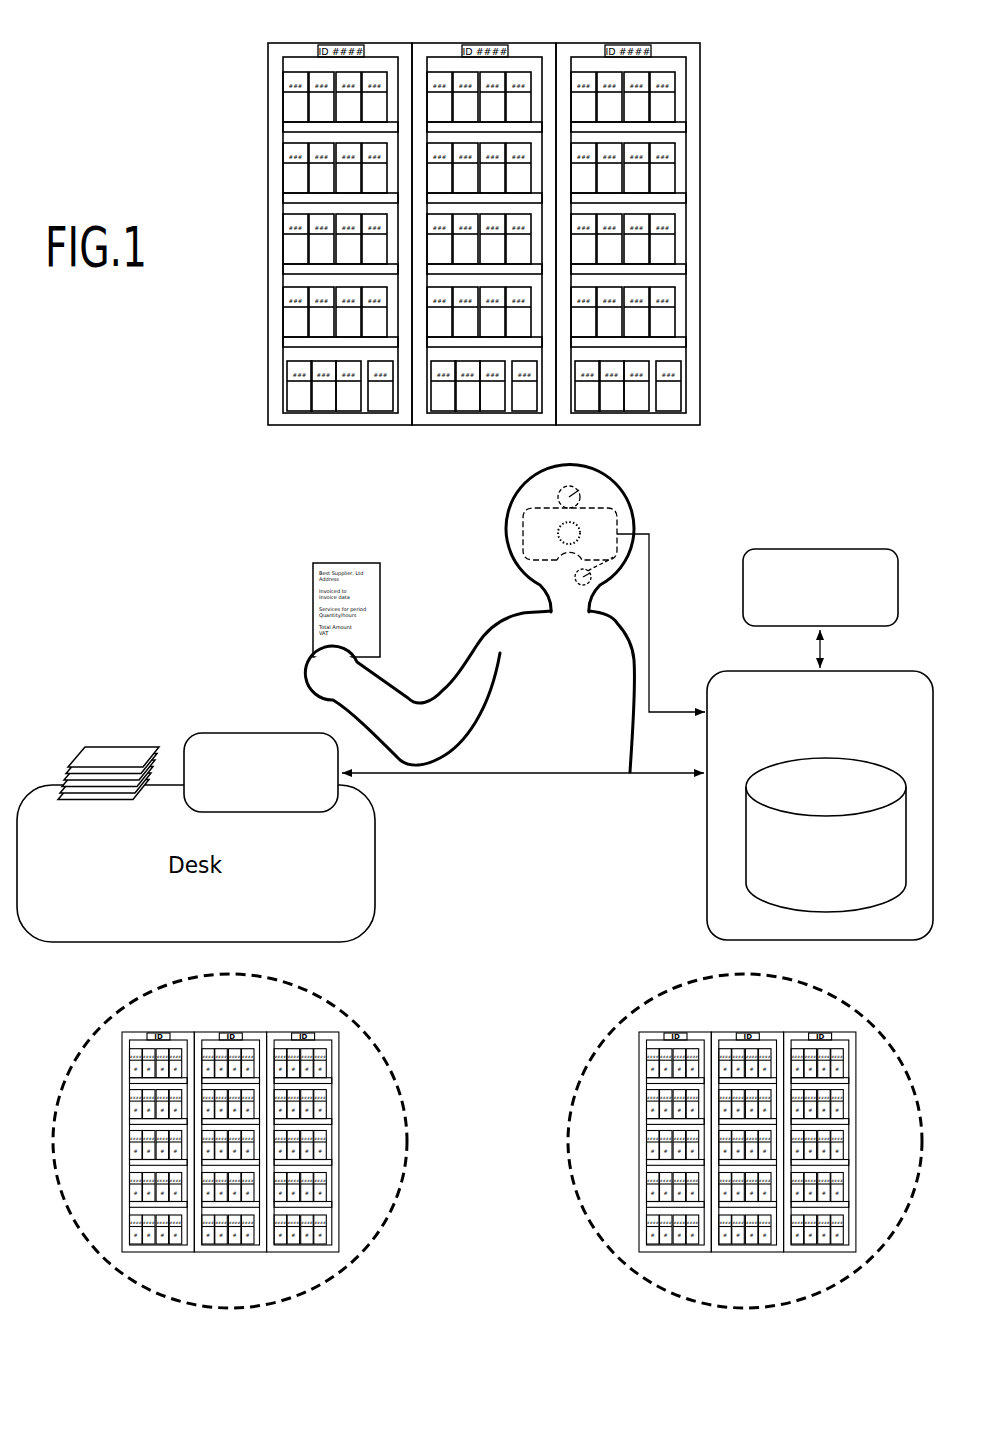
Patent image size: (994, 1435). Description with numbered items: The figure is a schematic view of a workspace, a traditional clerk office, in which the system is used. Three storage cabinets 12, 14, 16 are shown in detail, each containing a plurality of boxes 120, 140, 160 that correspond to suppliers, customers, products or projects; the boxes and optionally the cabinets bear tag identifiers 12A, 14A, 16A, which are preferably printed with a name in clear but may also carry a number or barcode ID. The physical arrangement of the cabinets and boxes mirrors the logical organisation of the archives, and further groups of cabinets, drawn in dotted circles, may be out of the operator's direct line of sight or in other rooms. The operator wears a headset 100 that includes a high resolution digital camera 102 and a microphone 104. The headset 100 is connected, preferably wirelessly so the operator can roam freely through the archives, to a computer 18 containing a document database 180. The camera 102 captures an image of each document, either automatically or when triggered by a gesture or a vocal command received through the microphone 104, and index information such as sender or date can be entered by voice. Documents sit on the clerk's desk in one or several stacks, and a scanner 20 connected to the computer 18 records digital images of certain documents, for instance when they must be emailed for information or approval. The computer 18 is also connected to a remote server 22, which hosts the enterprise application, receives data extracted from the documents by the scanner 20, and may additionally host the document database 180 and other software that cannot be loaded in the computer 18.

The cabinet 12 is at (333, 417).
The cabinet 14 is at (473, 417).
The cabinet 16 is at (623, 417).
The boxes 120 is at (378, 398).
The boxes 140 is at (518, 398).
The boxes 160 is at (667, 398).
The tag identifier 12A is at (341, 44).
The tag identifier 14A is at (485, 44).
The tag identifier 16A is at (634, 44).
The headset 100 is at (518, 534).
The high resolution digital camera 102 is at (579, 489).
The microphone 104 is at (583, 585).
The computer 18 is at (875, 676).
The document database 180 is at (873, 768).
The scanner 20 is at (268, 740).
The remote server 22 is at (828, 550).